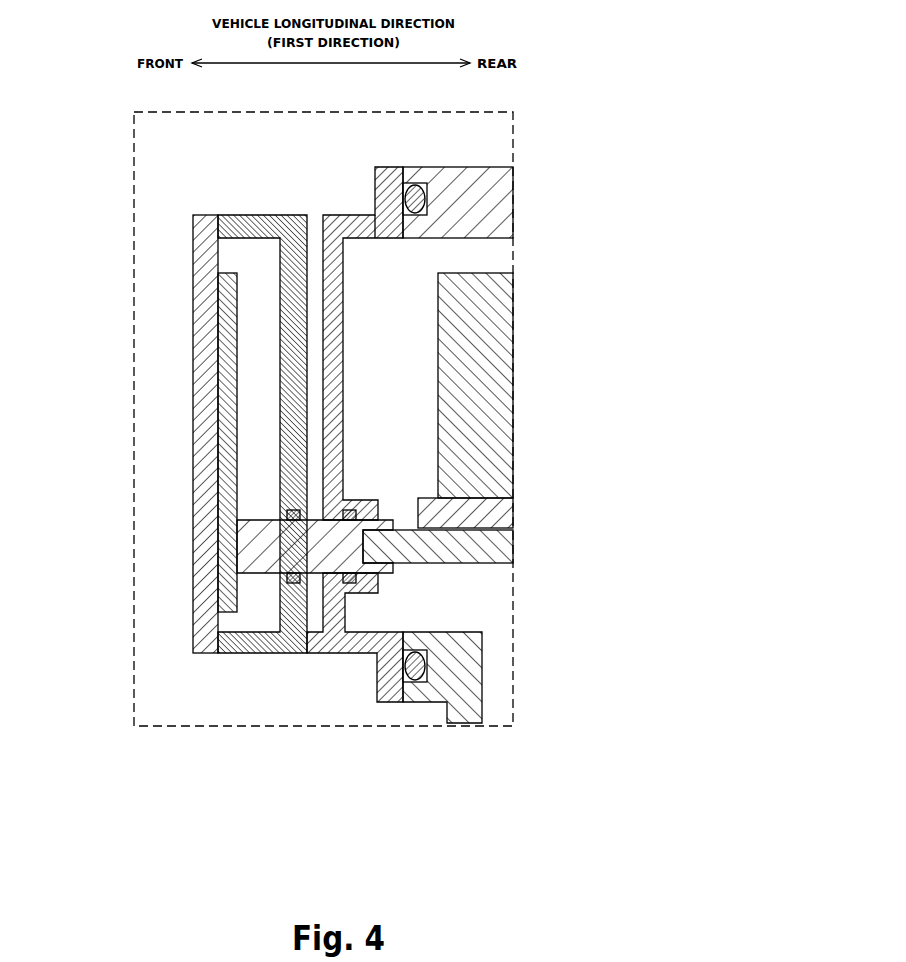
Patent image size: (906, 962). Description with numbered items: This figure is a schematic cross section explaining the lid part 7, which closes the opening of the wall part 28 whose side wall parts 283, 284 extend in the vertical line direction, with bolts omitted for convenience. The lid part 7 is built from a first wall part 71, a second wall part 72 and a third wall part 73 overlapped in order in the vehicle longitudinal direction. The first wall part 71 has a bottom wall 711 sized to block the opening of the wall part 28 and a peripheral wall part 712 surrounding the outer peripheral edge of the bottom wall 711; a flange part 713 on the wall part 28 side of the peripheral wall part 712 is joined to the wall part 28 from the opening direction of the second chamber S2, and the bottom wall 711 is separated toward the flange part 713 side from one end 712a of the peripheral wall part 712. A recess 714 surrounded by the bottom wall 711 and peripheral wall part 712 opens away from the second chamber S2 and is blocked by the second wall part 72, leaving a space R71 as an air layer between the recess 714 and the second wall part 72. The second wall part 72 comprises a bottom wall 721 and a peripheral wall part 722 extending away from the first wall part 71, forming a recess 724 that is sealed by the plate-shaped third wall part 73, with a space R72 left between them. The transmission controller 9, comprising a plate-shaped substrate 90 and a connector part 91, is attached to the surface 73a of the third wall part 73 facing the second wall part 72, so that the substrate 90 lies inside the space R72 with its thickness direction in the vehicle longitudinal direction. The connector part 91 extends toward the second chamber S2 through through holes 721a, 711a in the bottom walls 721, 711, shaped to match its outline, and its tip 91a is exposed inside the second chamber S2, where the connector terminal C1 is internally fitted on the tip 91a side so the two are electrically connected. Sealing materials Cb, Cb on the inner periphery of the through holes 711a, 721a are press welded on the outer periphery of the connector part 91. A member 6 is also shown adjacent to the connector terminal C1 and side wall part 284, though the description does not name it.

The wall part 28 is at (495, 394).
The side wall part 284 is at (493, 205).
The side wall part 283 is at (445, 665).
The shaft support member 6 is at (497, 330).
The connector terminal C1 is at (500, 543).
The second chamber S2 is at (418, 308).
The transmission controller 9 is at (250, 434).
The substrate 90 is at (214, 440).
The connector part 91 is at (254, 548).
The tip 91a is at (393, 566).
The lid part 7 is at (286, 479).
The first wall part 71 is at (346, 458).
The bottom wall 711 is at (333, 400).
The through hole 711a is at (375, 576).
The peripheral wall part 712 is at (340, 223).
The one end 712a is at (292, 214).
The flange part 713 is at (393, 168).
The second wall part 72 is at (294, 471).
The bottom wall 721 is at (300, 430).
The through hole 721a is at (312, 565).
The peripheral wall part 722 is at (240, 240).
The recess 724 is at (216, 237).
The recess 714 is at (297, 248).
The third wall part 73 is at (188, 523).
The surface 73a is at (224, 268).
The sealing material Cb is at (290, 510).
The space R72 is at (258, 353).
The space R71 is at (315, 357).